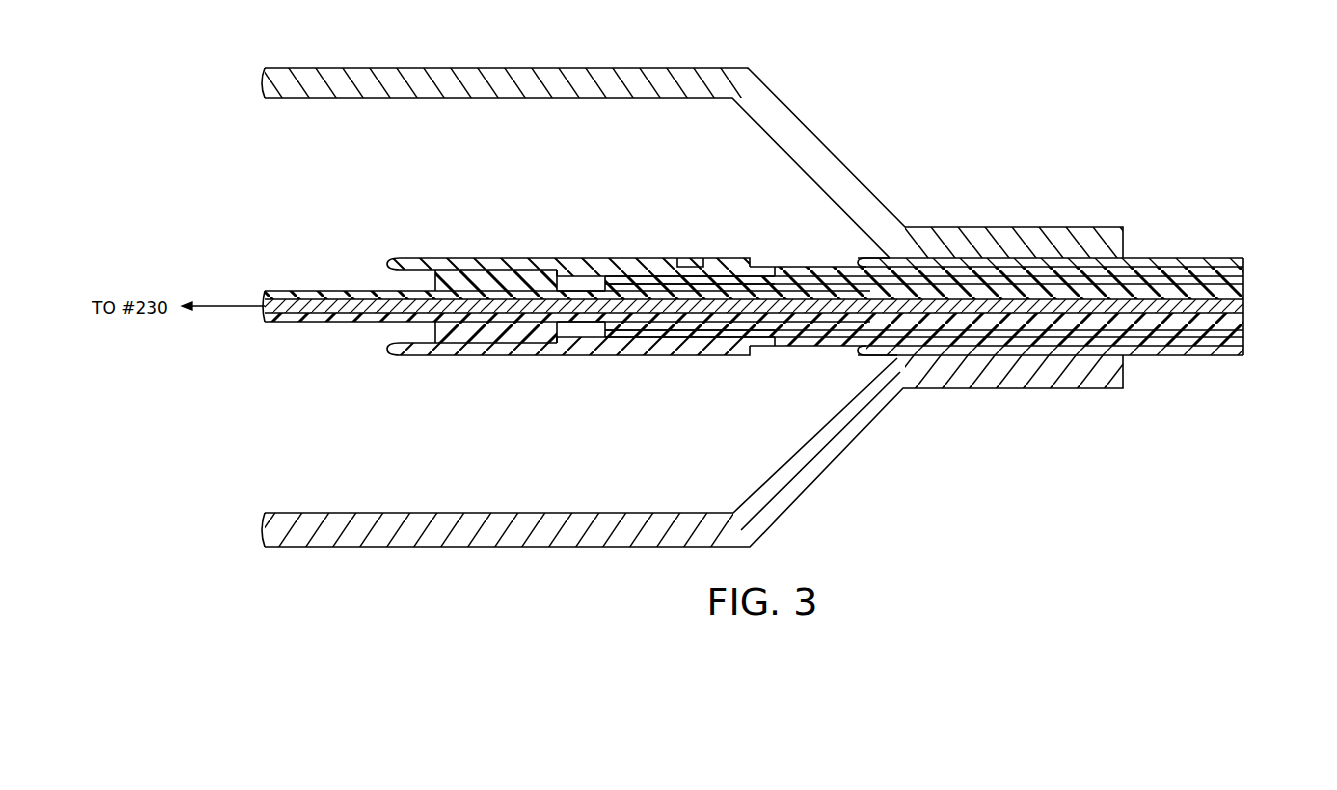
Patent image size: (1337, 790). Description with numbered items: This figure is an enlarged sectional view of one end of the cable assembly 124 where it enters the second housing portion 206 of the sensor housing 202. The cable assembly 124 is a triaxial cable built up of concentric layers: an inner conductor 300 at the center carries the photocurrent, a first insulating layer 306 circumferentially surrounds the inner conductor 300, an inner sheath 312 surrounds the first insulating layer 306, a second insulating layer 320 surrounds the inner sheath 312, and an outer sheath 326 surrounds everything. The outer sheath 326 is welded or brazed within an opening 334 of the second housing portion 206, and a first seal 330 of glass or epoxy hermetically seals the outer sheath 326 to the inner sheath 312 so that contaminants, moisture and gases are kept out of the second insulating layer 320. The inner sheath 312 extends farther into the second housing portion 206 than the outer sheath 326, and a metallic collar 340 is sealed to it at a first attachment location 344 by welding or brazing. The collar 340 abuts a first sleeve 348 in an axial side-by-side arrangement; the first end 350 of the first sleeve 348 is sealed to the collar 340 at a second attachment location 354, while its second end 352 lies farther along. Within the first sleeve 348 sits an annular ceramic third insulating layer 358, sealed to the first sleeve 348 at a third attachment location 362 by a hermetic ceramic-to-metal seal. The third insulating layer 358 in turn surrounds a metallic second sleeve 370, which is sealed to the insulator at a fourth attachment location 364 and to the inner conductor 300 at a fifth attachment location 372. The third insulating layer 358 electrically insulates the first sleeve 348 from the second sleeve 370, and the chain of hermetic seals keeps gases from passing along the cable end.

The sensor housing 202 is at (505, 68).
The second housing portion 206 is at (614, 82).
The opening 334 is at (985, 262).
The cable assembly 124 is at (1220, 258).
The outer sheath 326 is at (1180, 258).
The second insulating layer 320 is at (1243, 262).
The inner sheath 312 is at (1243, 273).
The first insulating layer 306 is at (1243, 284).
The inner conductor 300 is at (1243, 307).
The fifth attachment location 372 is at (330, 294).
The second sleeve 370 is at (337, 320).
The fourth attachment location 364 is at (400, 262).
The collar 340 is at (740, 258).
The second end 352 is at (420, 259).
The third attachment location 362 is at (480, 268).
The third insulating layer 358 is at (532, 272).
The first sleeve 348 is at (575, 262).
The second attachment location 354 is at (660, 260).
The first end 350 is at (690, 268).
The first attachment location 344 is at (778, 263).
The first seal 330 is at (868, 262).